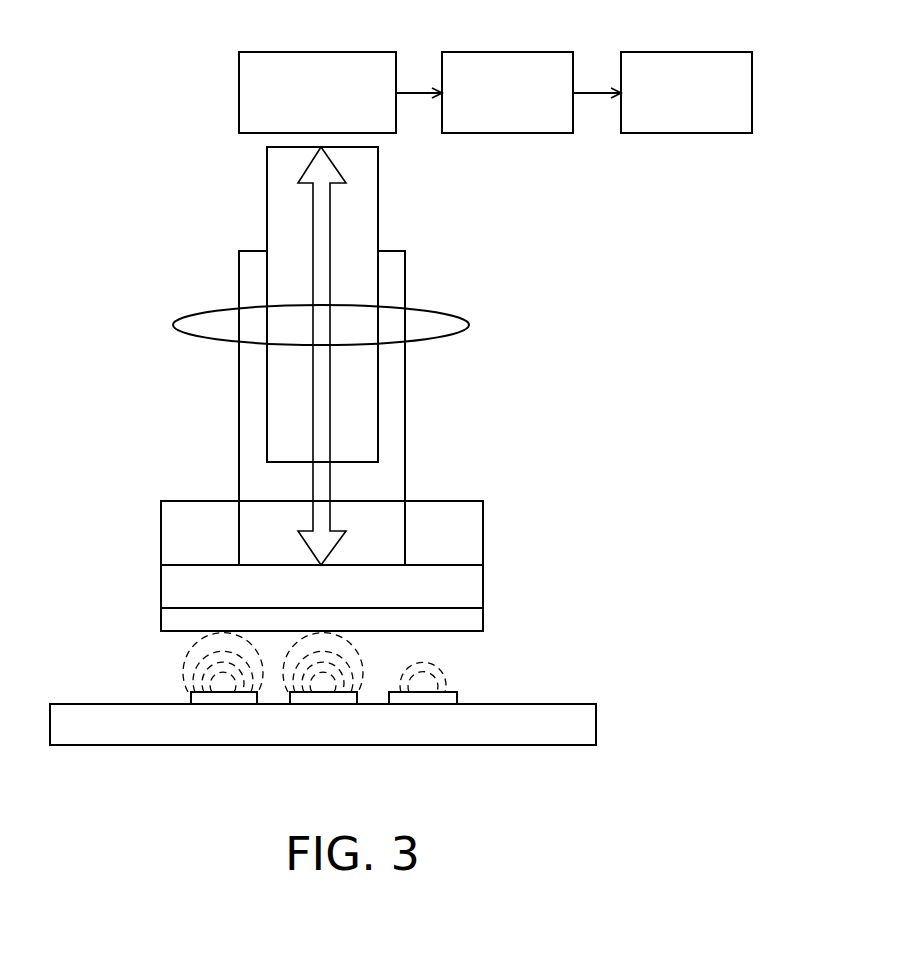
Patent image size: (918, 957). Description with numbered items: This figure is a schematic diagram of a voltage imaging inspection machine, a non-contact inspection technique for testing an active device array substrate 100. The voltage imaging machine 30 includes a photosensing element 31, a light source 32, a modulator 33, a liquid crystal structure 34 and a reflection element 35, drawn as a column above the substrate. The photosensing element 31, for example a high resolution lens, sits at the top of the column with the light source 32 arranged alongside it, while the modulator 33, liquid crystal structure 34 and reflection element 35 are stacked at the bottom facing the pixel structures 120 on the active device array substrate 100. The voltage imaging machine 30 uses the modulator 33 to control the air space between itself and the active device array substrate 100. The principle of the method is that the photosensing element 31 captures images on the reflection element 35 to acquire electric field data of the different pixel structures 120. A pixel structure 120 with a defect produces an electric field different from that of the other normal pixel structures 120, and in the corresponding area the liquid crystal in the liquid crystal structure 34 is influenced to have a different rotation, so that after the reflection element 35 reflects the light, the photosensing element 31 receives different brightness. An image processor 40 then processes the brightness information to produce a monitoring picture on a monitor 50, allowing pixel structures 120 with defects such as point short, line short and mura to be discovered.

The voltage imaging machine 30 is at (100, 246).
The photosensing element 31 is at (330, 52).
The light source 32 is at (455, 324).
The modulator 33 is at (475, 535).
The liquid crystal structure 34 is at (475, 589).
The reflection element 35 is at (475, 621).
The image processor 40 is at (507, 52).
The monitor 50 is at (687, 52).
The active device array substrate 100 is at (588, 726).
The pixel structures 120 is at (425, 700).